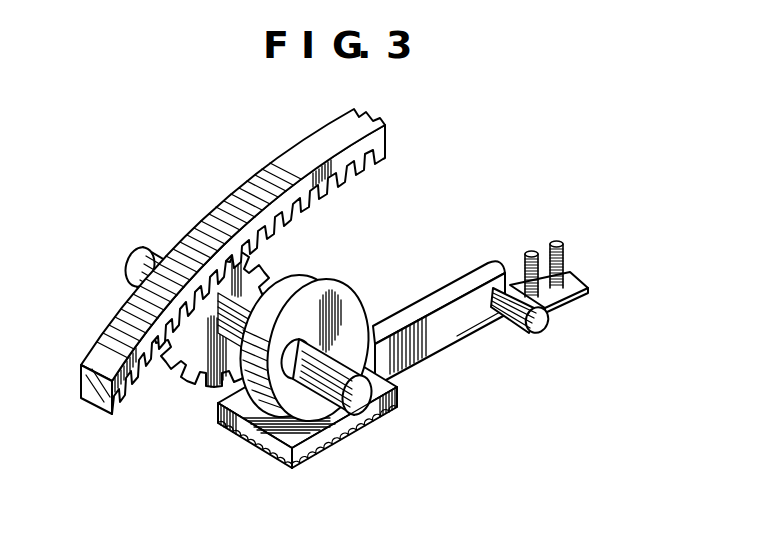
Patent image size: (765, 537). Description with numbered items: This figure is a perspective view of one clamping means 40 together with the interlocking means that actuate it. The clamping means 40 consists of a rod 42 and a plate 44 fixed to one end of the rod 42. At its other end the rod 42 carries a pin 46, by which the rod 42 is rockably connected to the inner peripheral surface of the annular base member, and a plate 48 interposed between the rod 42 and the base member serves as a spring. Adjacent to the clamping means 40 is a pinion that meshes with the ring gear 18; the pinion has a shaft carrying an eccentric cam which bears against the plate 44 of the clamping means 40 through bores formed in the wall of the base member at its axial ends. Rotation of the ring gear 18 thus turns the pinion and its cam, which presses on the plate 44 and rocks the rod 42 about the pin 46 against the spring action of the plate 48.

The ring gear 18 is at (387, 138).
The clamping means 40 is at (420, 372).
The rod 42 is at (440, 339).
The plate 44 is at (334, 432).
The pin 46 is at (507, 320).
The plate 48 is at (573, 283).